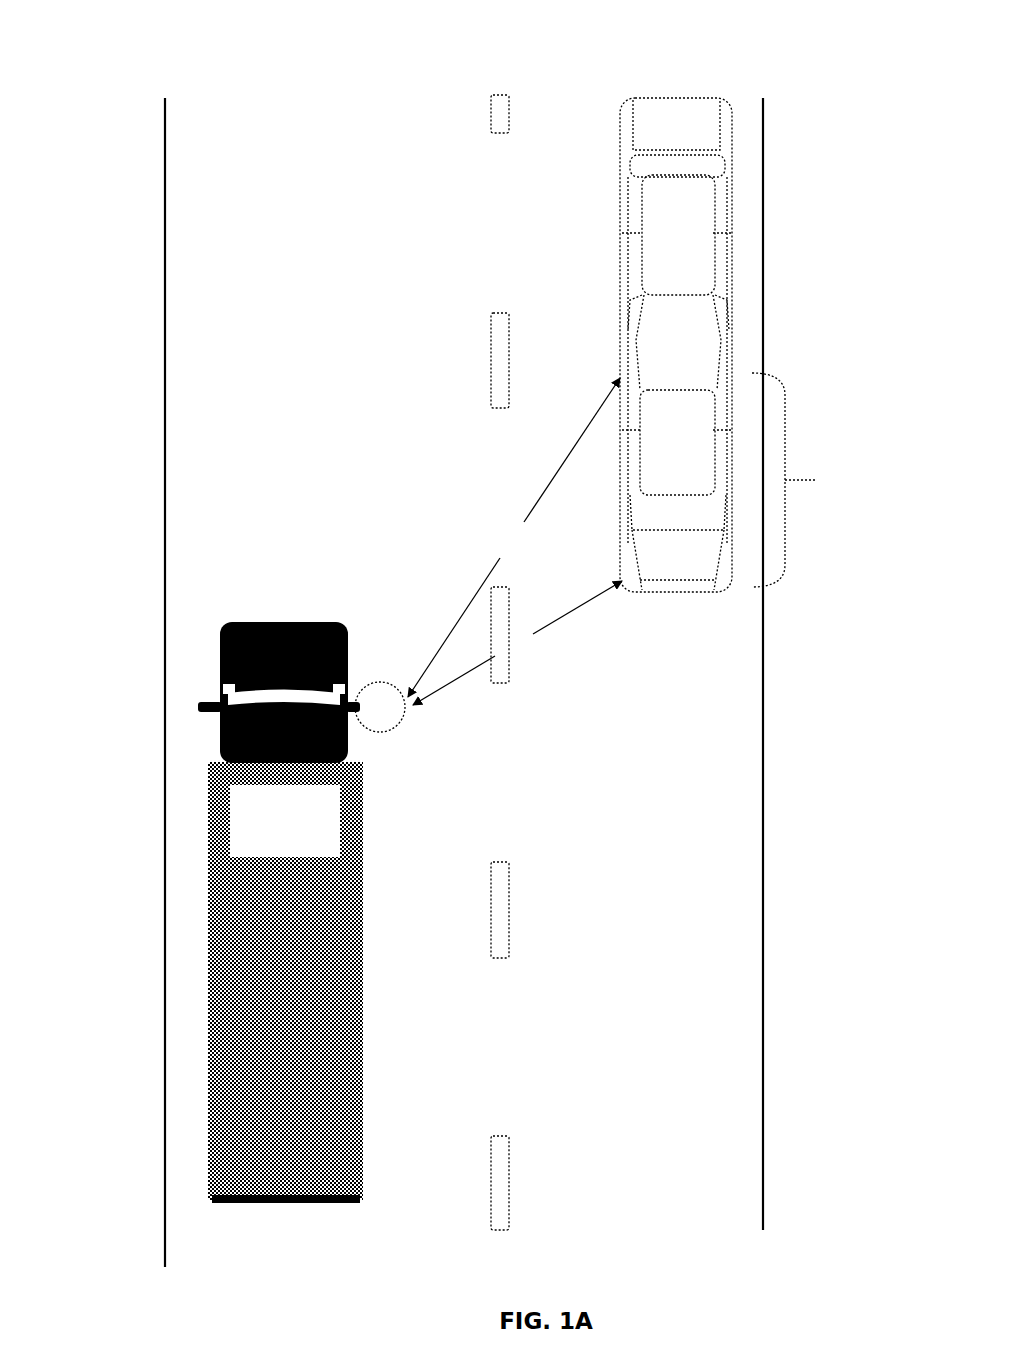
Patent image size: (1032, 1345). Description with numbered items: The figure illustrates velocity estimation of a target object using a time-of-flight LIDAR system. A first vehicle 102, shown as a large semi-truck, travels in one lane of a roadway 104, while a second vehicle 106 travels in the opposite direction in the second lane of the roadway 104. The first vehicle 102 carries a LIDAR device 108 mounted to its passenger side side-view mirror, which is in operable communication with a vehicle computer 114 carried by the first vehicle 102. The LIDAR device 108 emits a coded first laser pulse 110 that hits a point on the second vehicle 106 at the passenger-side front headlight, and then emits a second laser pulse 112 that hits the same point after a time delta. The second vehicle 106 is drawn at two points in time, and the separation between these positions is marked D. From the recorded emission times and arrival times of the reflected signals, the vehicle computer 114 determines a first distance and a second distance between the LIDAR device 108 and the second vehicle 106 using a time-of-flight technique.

The first vehicle 102 is at (207, 912).
The roadway 104 is at (165, 272).
The second vehicle 106 is at (683, 598).
The LIDAR device 108 is at (380, 682).
The first laser pulse 110 is at (514, 537).
The second laser pulse 112 is at (517, 643).
The vehicle computer 114 is at (285, 821).
The distance D is at (802, 480).